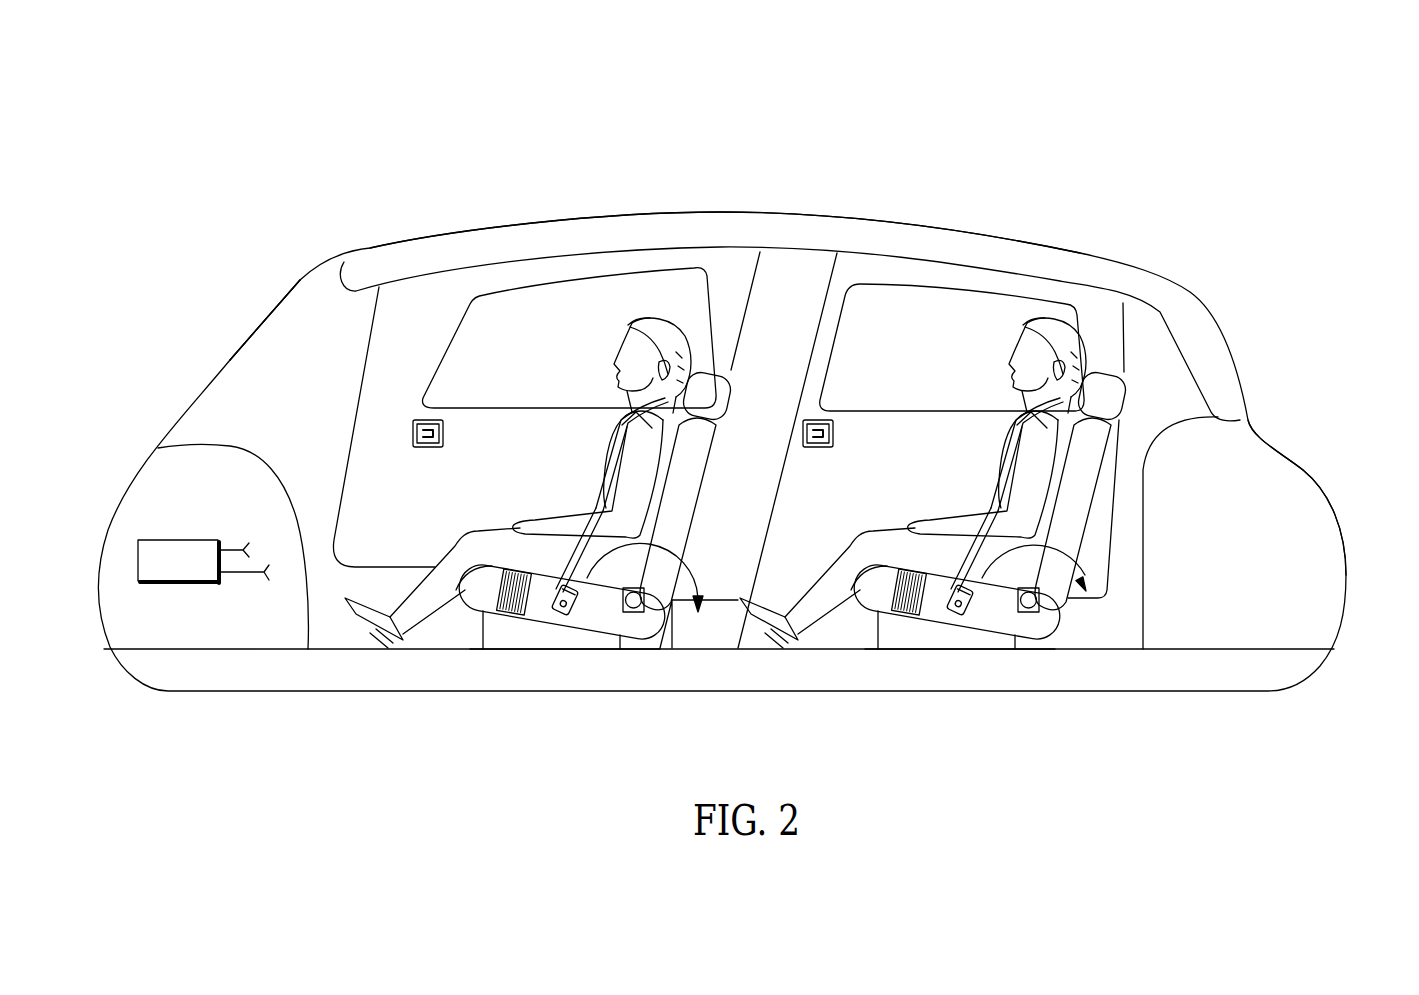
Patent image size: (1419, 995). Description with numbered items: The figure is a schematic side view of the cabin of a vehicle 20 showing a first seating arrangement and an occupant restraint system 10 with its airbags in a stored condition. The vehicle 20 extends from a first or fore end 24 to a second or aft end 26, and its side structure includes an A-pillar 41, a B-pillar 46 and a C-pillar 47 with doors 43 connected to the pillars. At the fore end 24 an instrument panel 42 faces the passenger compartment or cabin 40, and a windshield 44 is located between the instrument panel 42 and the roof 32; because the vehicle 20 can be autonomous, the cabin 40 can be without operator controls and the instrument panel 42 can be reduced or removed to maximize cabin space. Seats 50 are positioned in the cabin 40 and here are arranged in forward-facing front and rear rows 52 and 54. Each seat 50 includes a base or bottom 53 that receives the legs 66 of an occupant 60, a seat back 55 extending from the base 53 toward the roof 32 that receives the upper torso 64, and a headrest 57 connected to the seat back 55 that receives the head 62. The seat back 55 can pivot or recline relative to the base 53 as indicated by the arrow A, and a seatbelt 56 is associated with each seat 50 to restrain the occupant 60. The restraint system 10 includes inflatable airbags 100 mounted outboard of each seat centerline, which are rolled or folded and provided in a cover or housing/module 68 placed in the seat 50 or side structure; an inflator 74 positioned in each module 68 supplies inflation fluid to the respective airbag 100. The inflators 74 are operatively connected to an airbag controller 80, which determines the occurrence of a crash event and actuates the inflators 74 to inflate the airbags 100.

The occupant restraint system 10 is at (312, 709).
The vehicle 20 is at (1322, 575).
The first or fore end 24 is at (165, 381).
The second or aft end 26 is at (1291, 386).
The roof 32 is at (714, 212).
The passenger compartment or cabin 40 is at (807, 268).
The A-pillar 41 is at (313, 379).
The instrument panel 42 is at (247, 455).
The doors 43 is at (500, 448).
The windshield or windscreen 44 is at (230, 357).
The B-pillar 46 is at (742, 539).
The C-pillar 47 is at (1172, 415).
The seats 50 is at (558, 636).
The front row 52 is at (603, 670).
The base or bottom 53 is at (499, 568).
The rear row 54 is at (1013, 672).
The seat back 55 is at (710, 433).
The seatbelt 56 is at (593, 504).
The headrest 57 is at (730, 382).
The occupant 60 is at (637, 442).
The head 62 is at (683, 346).
The upper torso 64 is at (630, 473).
The legs 66 is at (473, 548).
The cover or housing/module 68 is at (507, 631).
The inflator 74 is at (497, 612).
The airbag controller 80 is at (180, 548).
The inflatable airbags 100 is at (470, 562).